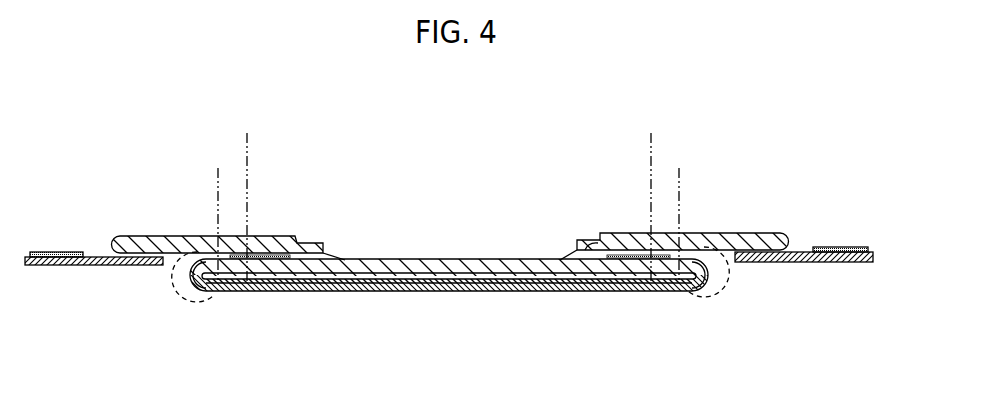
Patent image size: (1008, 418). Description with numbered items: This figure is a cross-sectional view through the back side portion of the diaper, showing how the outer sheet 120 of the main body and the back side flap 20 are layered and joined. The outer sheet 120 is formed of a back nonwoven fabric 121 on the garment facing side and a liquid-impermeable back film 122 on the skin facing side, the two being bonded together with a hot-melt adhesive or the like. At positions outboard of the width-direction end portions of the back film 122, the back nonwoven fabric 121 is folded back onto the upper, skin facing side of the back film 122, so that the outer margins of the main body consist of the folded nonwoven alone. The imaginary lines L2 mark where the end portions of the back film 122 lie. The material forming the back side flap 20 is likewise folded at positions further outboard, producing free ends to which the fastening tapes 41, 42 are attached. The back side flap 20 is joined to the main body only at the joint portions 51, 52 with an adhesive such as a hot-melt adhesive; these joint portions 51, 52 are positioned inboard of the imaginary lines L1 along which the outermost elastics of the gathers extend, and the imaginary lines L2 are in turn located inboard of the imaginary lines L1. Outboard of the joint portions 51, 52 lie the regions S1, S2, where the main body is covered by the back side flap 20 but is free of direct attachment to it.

The back side flap 20 is at (449, 285).
The fastening tape 41 is at (797, 263).
The fastening tape 42 is at (95, 266).
The joint portion 51 is at (640, 233).
The joint portion 52 is at (259, 236).
The outer sheet 120 is at (449, 337).
The back nonwoven fabric 121 is at (486, 288).
The back film 122 is at (431, 288).
The imaginary line L1 is at (447, 211).
The imaginary line L2 is at (448, 193).
The region S1 is at (705, 297).
The region S2 is at (190, 300).